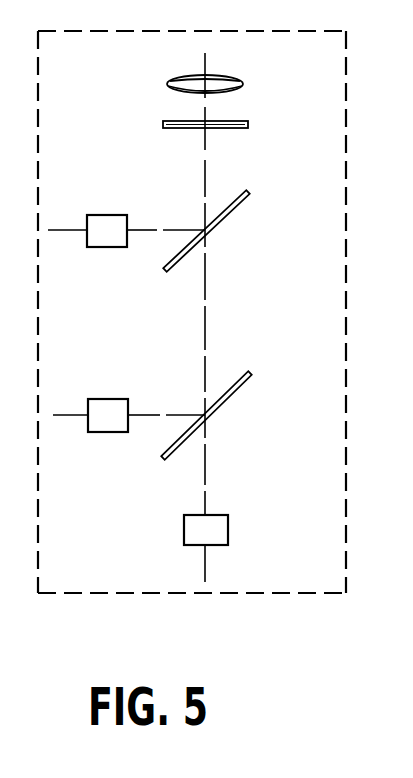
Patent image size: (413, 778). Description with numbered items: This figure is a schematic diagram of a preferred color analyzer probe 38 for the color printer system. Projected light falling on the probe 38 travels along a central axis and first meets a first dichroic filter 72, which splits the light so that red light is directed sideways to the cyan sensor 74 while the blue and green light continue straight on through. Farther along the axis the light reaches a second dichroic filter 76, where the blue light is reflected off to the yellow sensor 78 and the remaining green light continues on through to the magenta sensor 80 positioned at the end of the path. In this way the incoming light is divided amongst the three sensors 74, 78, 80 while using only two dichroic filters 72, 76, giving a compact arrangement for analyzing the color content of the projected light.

The color analyzer probe 38 is at (224, 333).
The first dichroic filter 72 is at (237, 205).
The cyan sensor 74 is at (118, 215).
The second dichroic filter 76 is at (230, 400).
The yellow sensor 78 is at (119, 399).
The magenta sensor 80 is at (228, 528).